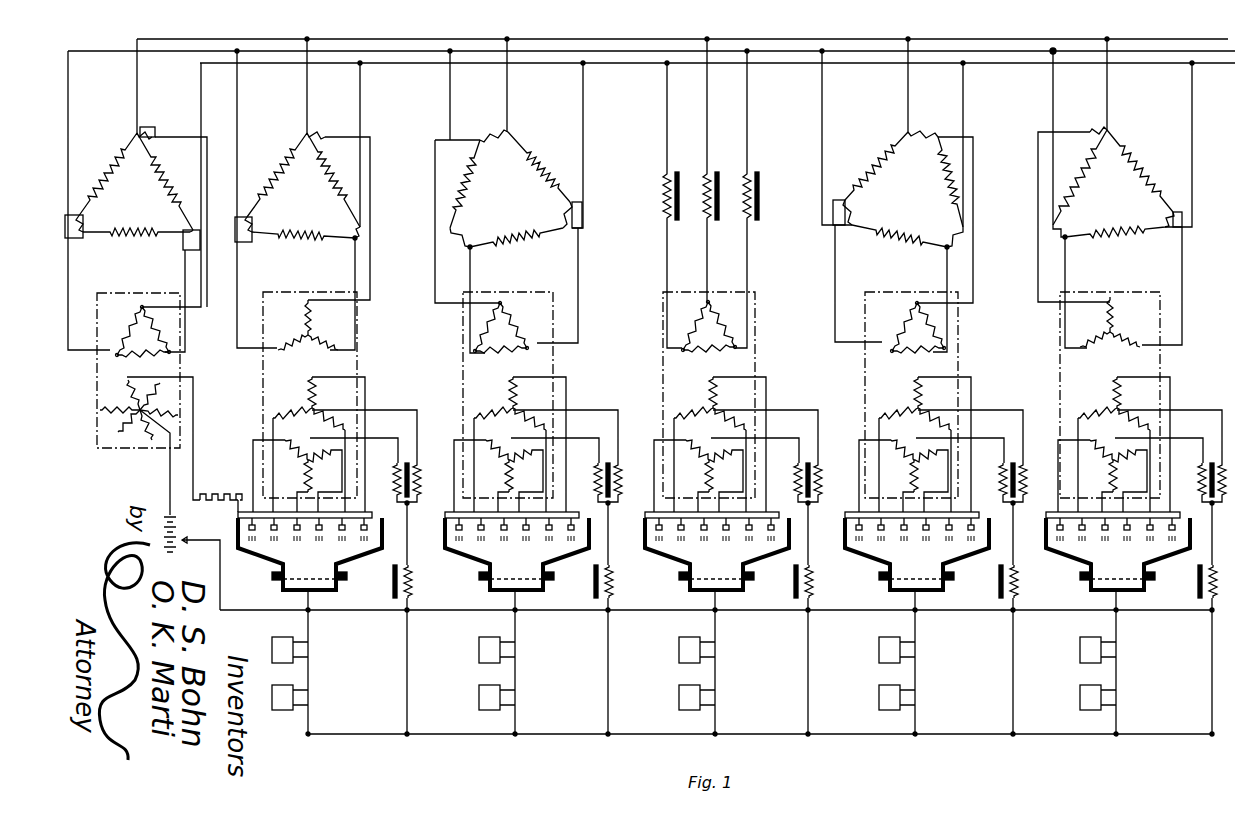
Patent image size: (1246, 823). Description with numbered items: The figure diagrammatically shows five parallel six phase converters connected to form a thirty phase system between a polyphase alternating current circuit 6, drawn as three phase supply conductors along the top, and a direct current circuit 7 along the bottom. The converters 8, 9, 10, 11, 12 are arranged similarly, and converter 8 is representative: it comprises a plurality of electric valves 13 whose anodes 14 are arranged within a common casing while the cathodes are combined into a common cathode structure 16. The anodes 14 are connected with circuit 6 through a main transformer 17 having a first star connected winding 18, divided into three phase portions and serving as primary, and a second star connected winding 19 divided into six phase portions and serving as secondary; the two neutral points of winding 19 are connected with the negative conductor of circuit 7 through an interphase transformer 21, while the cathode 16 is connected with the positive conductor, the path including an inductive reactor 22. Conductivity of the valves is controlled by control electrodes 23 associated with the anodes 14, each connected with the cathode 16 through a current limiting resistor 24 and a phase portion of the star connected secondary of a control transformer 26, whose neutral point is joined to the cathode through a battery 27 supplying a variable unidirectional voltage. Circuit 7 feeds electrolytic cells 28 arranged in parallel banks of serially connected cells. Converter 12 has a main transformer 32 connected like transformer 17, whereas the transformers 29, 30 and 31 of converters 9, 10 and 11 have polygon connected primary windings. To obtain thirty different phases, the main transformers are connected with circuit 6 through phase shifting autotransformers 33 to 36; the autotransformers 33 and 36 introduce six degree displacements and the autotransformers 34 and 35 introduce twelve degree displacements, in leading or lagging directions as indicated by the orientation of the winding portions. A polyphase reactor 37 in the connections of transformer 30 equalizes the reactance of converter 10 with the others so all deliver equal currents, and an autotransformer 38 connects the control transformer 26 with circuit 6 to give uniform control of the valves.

The polyphase alternating current circuit 6 is at (1160, 40).
The direct current circuit 7 is at (388, 618).
The converter 8 is at (254, 425).
The converter 9 is at (455, 423).
The converter 10 is at (656, 423).
The converter 11 is at (861, 421).
The converter 12 is at (1058, 420).
The electric valves 13 is at (278, 562).
The anodes 14 is at (240, 527).
The common cathode structure 16 is at (305, 590).
The main transformer 17 is at (357, 345).
The first star connected winding 18 is at (316, 326).
The second star connected winding 19 is at (302, 450).
The interphase transformer 21 is at (405, 462).
The inductive reactor 22 is at (392, 583).
The control electrodes 23 is at (240, 550).
The current limiting resistor 24 is at (222, 497).
The control transformer 26 is at (97, 386).
The battery 27 is at (183, 545).
The electrolytic cells 28 is at (272, 640).
The main transformer 29 is at (553, 363).
The main transformer 30 is at (755, 318).
The main transformer 31 is at (958, 331).
The main transformer 32 is at (1160, 366).
The autotransformer 33 is at (297, 140).
The autotransformer 34 is at (516, 144).
The autotransformer 35 is at (898, 144).
The autotransformer 36 is at (1117, 139).
The polyphase reactor 37 is at (688, 167).
The autotransformer 38 is at (132, 144).